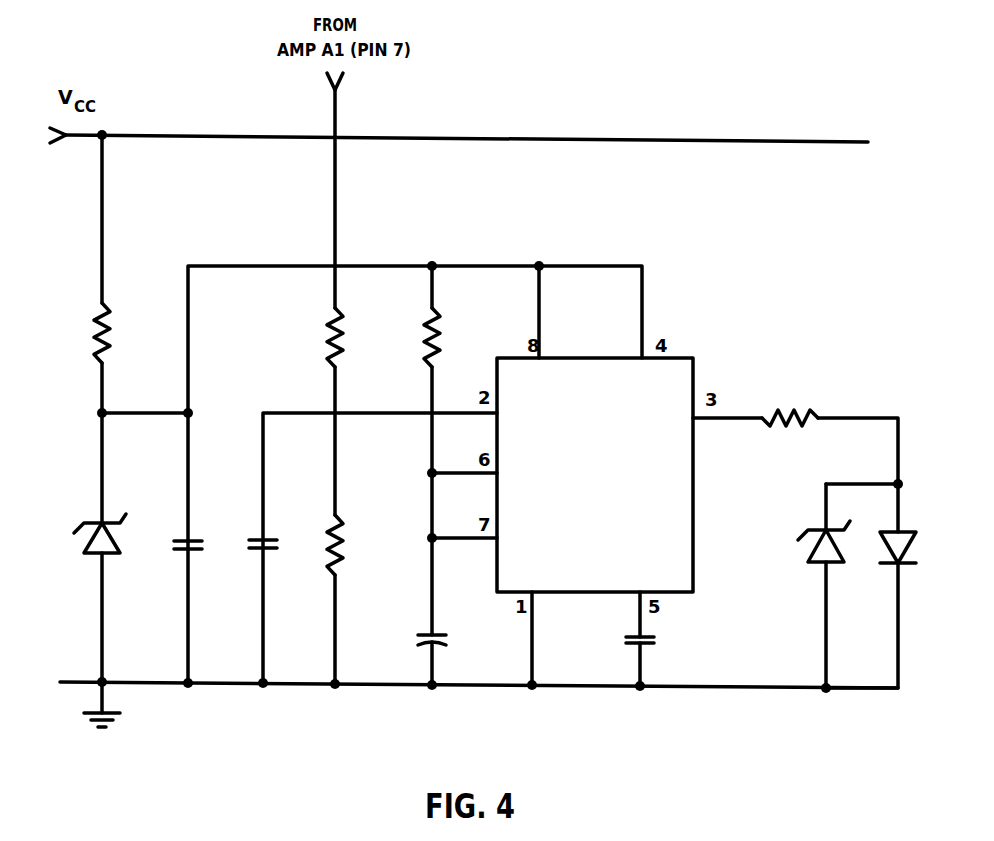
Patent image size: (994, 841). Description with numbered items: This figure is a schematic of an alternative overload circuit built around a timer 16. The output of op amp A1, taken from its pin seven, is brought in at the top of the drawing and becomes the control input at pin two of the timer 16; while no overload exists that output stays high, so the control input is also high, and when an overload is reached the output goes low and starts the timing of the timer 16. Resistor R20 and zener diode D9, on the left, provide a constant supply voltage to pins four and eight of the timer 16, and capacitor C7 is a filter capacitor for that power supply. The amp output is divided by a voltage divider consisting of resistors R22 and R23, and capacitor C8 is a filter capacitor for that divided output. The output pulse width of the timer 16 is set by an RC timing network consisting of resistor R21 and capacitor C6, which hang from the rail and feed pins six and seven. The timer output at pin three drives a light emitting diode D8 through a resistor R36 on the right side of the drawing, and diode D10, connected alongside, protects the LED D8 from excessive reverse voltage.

The 555 timer 16 is at (580, 549).
The resistor R20 is at (107, 332).
The zener diode D9 is at (108, 555).
The filter capacitor C7 is at (198, 542).
The filter capacitor C8 is at (276, 548).
The resistor R22 is at (328, 340).
The resistor R21 is at (426, 346).
The resistor R23 is at (338, 536).
The capacitor C6 is at (437, 637).
The resistor R36 is at (786, 410).
The diode D10 is at (818, 560).
The light emitting diode D8 is at (893, 566).